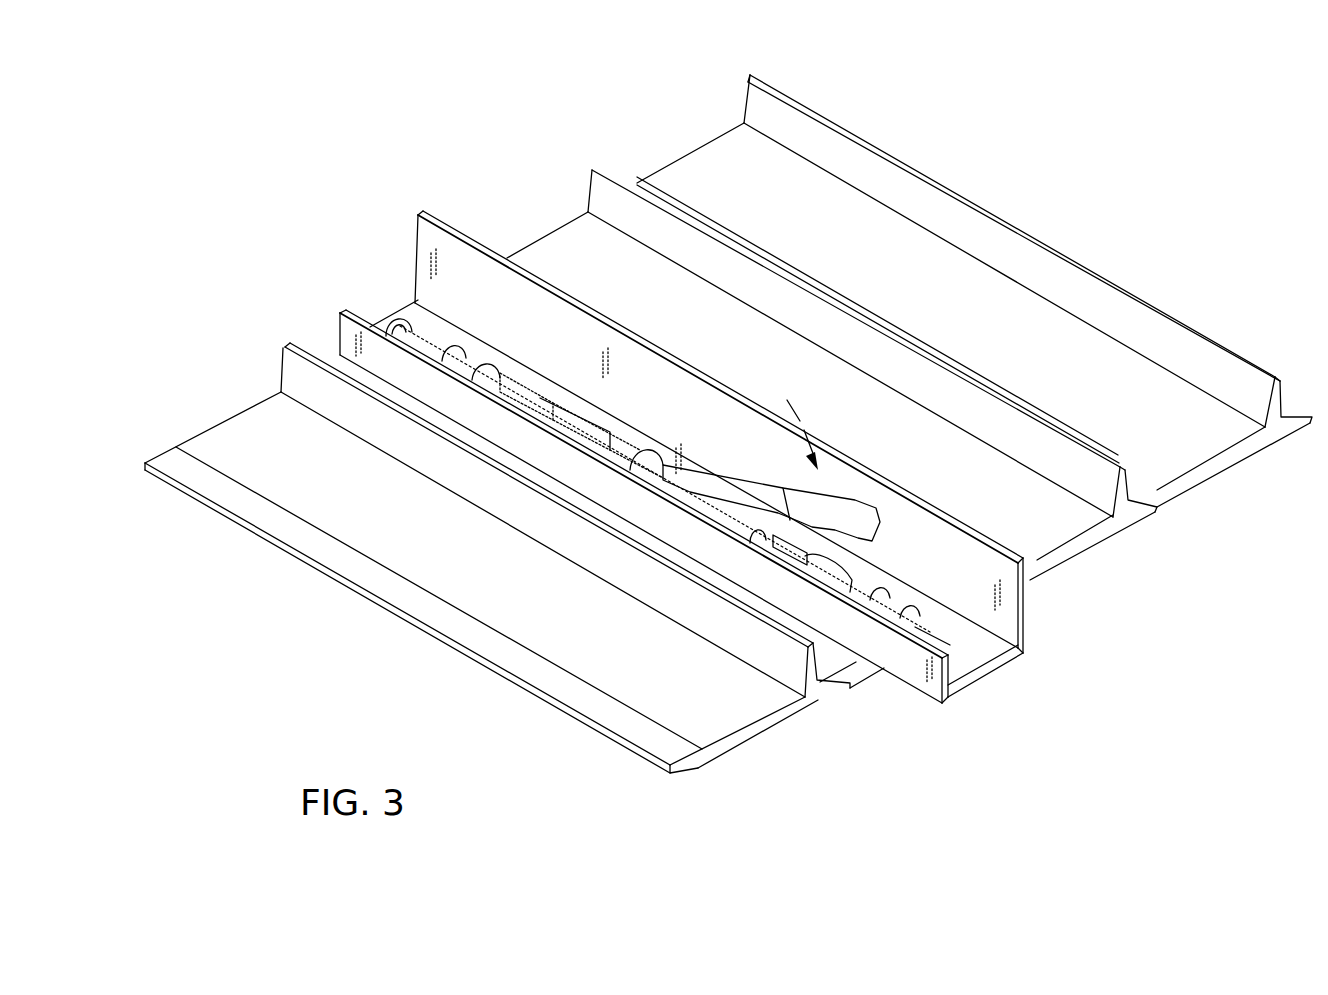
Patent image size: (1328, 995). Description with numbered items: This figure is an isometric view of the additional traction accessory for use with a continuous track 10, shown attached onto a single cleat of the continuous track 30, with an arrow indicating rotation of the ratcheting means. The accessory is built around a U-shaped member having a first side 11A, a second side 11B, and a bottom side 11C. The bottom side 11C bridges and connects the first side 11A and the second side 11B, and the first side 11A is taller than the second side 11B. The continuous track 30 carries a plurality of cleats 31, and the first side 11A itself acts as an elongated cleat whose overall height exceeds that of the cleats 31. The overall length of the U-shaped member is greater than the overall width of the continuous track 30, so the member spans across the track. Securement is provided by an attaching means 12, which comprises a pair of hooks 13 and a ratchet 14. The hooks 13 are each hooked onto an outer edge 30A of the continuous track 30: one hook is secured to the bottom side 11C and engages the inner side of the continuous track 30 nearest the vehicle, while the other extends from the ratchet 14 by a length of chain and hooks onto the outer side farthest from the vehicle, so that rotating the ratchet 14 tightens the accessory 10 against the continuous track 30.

The additional traction accessory for use with a continuous track 10 is at (384, 168).
The first side 11A is at (1010, 602).
The second side 11B is at (903, 667).
The bottom side 11C is at (987, 646).
The attaching means 12 is at (952, 400).
The hooks 13 is at (384, 317).
The ratchet 14 is at (779, 490).
The continuous track 30 is at (247, 432).
The outer edge 30A is at (753, 733).
The cleats 31 is at (292, 377).